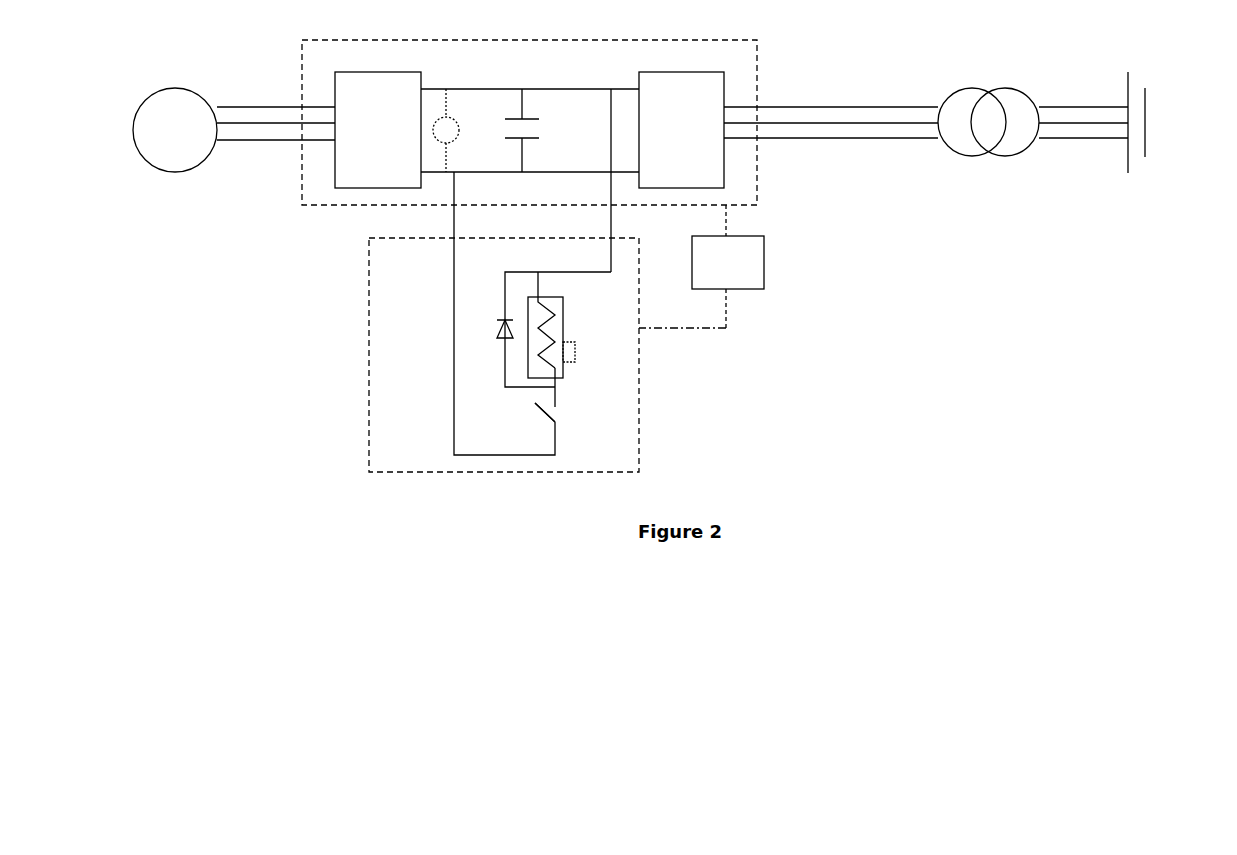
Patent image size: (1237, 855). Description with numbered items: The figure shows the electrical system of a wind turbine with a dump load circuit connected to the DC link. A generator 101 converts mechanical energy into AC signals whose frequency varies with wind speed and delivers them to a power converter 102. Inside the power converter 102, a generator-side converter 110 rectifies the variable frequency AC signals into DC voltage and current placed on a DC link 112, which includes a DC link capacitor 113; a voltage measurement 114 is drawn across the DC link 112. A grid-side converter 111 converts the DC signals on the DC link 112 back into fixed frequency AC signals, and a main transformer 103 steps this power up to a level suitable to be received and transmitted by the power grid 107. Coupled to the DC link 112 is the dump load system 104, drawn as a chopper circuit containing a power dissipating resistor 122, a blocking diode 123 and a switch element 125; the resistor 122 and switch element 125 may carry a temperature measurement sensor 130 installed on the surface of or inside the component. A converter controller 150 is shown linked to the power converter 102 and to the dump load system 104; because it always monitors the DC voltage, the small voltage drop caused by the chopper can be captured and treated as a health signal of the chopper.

The generator 101 is at (167, 88).
The power converter 102 is at (758, 72).
The main transformer 103 is at (1003, 88).
The dump load system 104 is at (369, 355).
The power grid 107 is at (1147, 100).
The generator-side converter 110 is at (378, 130).
The grid-side converter 111 is at (681, 130).
The DC link 112 is at (583, 83).
The DC link capacitor 113 is at (540, 134).
The voltage measurement 114 is at (456, 118).
The power dissipating resistor 122 is at (562, 318).
The blocking diode 123 is at (486, 332).
The switch element 125 is at (566, 421).
The temperature measurement sensor 130 is at (575, 351).
The converter controller 150 is at (765, 275).